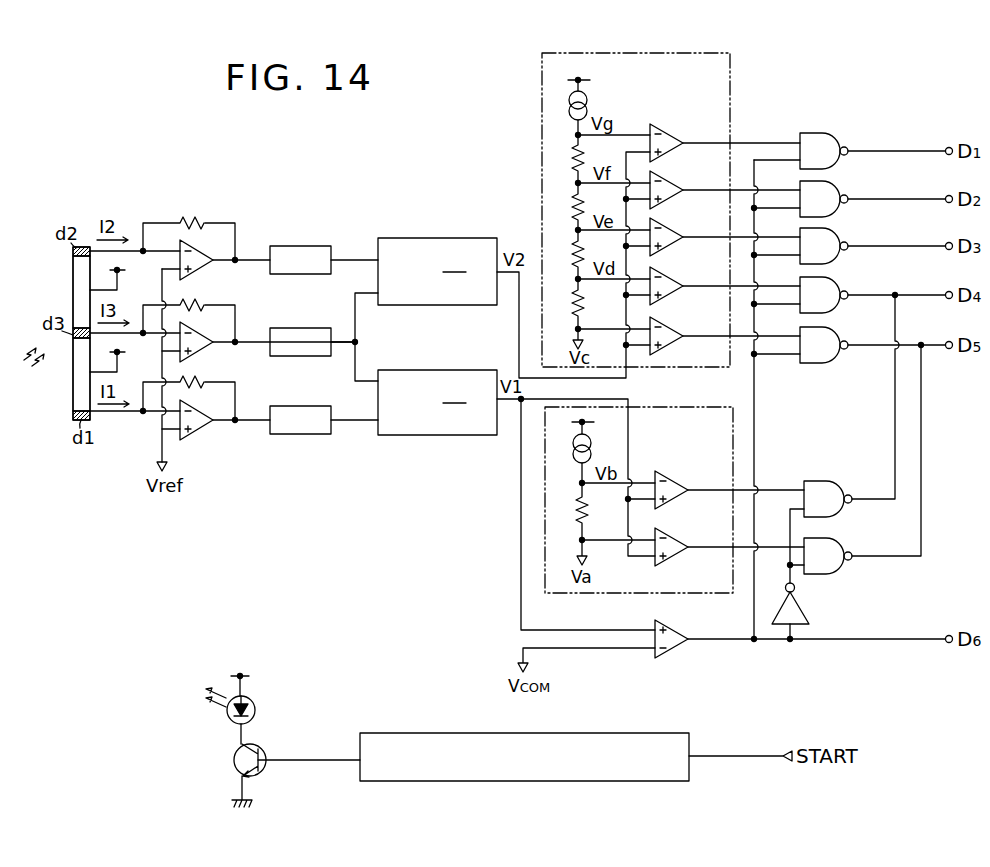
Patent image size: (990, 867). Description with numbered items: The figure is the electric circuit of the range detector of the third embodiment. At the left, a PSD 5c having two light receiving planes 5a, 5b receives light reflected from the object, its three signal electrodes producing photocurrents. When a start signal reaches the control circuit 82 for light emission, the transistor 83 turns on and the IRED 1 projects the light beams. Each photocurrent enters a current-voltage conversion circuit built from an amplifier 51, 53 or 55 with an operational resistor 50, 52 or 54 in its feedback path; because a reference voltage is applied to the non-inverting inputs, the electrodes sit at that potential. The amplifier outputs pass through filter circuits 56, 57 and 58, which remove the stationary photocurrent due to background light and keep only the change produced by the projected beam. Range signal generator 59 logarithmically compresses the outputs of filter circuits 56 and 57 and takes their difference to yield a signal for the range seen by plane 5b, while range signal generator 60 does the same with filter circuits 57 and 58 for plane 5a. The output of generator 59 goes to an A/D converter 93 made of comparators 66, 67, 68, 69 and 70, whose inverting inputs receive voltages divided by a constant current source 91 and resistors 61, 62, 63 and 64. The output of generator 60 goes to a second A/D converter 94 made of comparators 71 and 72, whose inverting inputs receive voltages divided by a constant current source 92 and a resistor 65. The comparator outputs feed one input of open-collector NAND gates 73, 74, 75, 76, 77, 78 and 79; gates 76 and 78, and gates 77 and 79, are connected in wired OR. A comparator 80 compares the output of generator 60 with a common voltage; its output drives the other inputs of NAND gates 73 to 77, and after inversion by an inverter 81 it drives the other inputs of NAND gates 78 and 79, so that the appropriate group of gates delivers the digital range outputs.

The IRED 1 is at (256, 706).
The PSD 5c is at (36, 242).
The light receiving plane 5a is at (73, 400).
The light receiving plane 5b is at (73, 291).
The operational resistor 50 is at (193, 218).
The amplifier 51 is at (200, 258).
The operational resistor 52 is at (196, 304).
The amplifier 53 is at (200, 340).
The operational resistor 54 is at (196, 382).
The amplifier 55 is at (200, 421).
The filter circuit 56 is at (301, 250).
The filter circuit 57 is at (299, 331).
The filter circuit 58 is at (299, 411).
The range signal generator 59 is at (456, 238).
The range signal generator 60 is at (461, 370).
The resistor 61 is at (572, 152).
The resistor 62 is at (572, 202).
The resistor 63 is at (572, 250).
The resistor 64 is at (596, 296).
The resistor 65 is at (586, 504).
The comparator 66 is at (669, 142).
The comparator 67 is at (669, 190).
The comparator 68 is at (669, 237).
The comparator 69 is at (669, 286).
The comparator 70 is at (669, 336).
The comparator 71 is at (671, 487).
The comparator 72 is at (670, 548).
The NAND gate 73 is at (833, 140).
The NAND gate 74 is at (833, 188).
The NAND gate 75 is at (833, 236).
The NAND gate 76 is at (833, 285).
The NAND gate 77 is at (833, 335).
The NAND gate 78 is at (835, 491).
The NAND gate 79 is at (835, 548).
The comparator 80 is at (668, 632).
The inverter 81 is at (796, 611).
The control circuit for light emission 82 is at (668, 733).
The transistor for light emission 83 is at (257, 773).
The constant current source 91 is at (589, 97).
The constant current source 92 is at (593, 440).
The A/D converter 93 is at (730, 122).
The A/D converter 94 is at (712, 407).